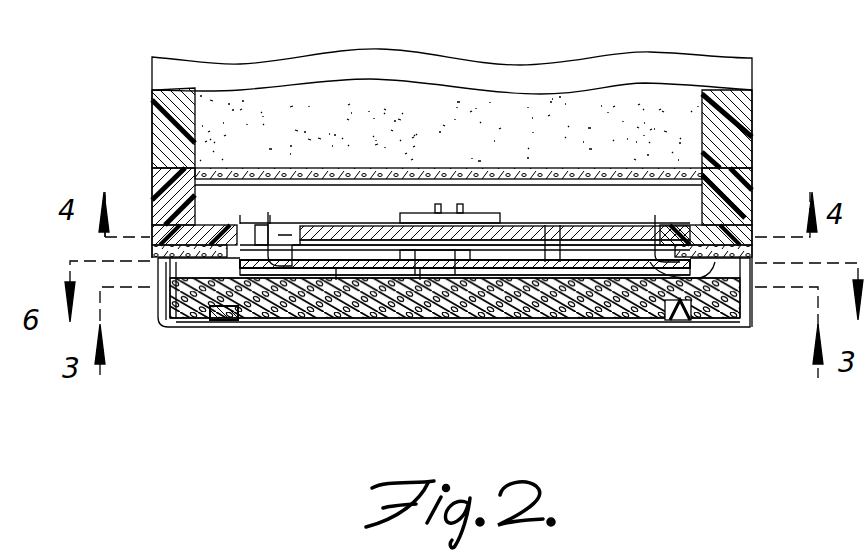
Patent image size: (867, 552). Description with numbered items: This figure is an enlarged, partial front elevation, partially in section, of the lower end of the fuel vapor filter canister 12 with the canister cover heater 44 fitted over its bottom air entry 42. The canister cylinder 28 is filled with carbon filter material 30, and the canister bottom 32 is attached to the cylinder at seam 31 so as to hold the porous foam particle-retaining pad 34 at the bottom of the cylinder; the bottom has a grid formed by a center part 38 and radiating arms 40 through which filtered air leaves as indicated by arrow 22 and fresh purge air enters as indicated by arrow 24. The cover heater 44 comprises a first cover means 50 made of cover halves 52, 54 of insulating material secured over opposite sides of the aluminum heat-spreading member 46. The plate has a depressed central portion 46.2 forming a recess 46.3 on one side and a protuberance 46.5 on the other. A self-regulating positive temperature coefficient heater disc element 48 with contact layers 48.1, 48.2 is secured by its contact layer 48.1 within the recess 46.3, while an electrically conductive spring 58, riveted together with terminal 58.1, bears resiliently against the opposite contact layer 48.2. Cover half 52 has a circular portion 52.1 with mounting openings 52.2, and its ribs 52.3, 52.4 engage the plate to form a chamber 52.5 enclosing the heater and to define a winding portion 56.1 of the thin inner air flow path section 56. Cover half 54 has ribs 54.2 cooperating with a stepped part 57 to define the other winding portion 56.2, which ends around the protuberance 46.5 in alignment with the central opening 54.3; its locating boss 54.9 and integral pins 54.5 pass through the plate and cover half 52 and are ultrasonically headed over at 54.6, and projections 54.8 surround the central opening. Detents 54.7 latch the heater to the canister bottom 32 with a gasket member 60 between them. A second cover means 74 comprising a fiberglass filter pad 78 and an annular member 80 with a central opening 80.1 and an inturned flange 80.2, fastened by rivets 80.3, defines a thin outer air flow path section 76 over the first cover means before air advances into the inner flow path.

The canister 12 is at (151, 75).
The arrow 22 is at (578, 168).
The arrow 24 is at (330, 212).
The canister cylinder 28 is at (160, 99).
The filter material 30 is at (260, 108).
The seam 31 is at (151, 167).
The canister bottom 32 is at (150, 182).
The particle-retaining pad 34 is at (205, 168).
The center part 38 is at (505, 186).
The radiating arms 40 is at (345, 192).
The bottom air entry 42 is at (156, 206).
The canister cover heater 44 is at (158, 299).
The heat-spreading member 46 is at (376, 256).
The depressed central portion 46.2 is at (436, 250).
The recess 46.3 is at (418, 244).
The protuberance 46.5 is at (412, 254).
The heater disc element 48 is at (486, 272).
The contact layer 48.1 is at (516, 266).
The contact layer 48.2 is at (510, 300).
The first cover means 50 is at (196, 320).
The cover half 52 is at (312, 272).
The circular portion 52.1 is at (236, 300).
The mounting openings 52.2 is at (302, 276).
The rib 52.3 is at (556, 247).
The rib 52.4 is at (588, 268).
The chamber 52.5 is at (402, 262).
The cover half 54 is at (621, 234).
The ribs 54.2 is at (537, 230).
The central opening 54.3 is at (462, 228).
The pins 54.5 is at (282, 236).
The headed ends 54.6 is at (259, 266).
The detents 54.7 is at (240, 216).
The projections 54.8 is at (480, 220).
The locating boss 54.9 is at (642, 252).
The inner air flow path section 56 is at (310, 226).
The portion of inner air flow path section 56.1 is at (330, 216).
The portion of inner air flow path section 56.2 is at (326, 236).
The stepped part 57 is at (281, 200).
The electrically conductive spring 58 is at (466, 270).
The terminal 58.1 is at (421, 268).
The gasket member 60 is at (152, 249).
The second cover means 74 is at (166, 329).
The outer air flow path section 76 is at (426, 272).
The filter pad 78 is at (340, 300).
The annular member 80 is at (172, 326).
The central opening 80.1 is at (672, 322).
The inturned flange 80.2 is at (702, 320).
The rivets 80.3 is at (732, 300).